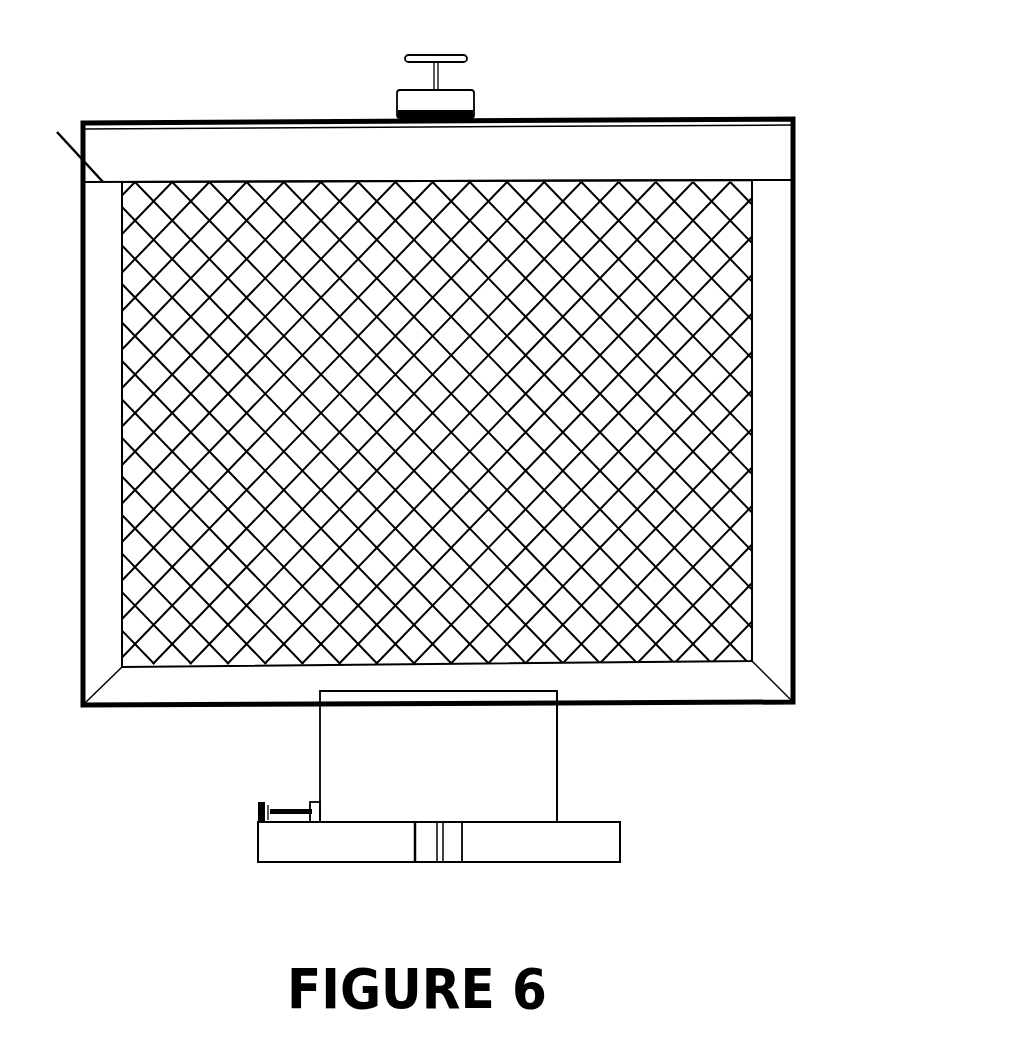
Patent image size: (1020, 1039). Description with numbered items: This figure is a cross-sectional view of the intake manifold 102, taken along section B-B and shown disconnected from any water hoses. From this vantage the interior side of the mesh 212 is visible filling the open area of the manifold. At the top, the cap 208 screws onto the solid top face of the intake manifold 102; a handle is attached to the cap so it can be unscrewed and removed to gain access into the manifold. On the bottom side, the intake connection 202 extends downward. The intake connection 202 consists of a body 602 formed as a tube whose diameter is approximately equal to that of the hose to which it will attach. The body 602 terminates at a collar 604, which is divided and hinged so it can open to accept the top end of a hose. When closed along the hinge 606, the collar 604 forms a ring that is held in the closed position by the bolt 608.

The intake manifold 102 is at (782, 285).
The mesh 212 is at (715, 637).
The cap 208 is at (433, 57).
The intake connection 202 is at (543, 800).
The body 602 is at (328, 743).
The collar 604 is at (588, 850).
The hinge 606 is at (427, 853).
The bolt 608 is at (283, 805).